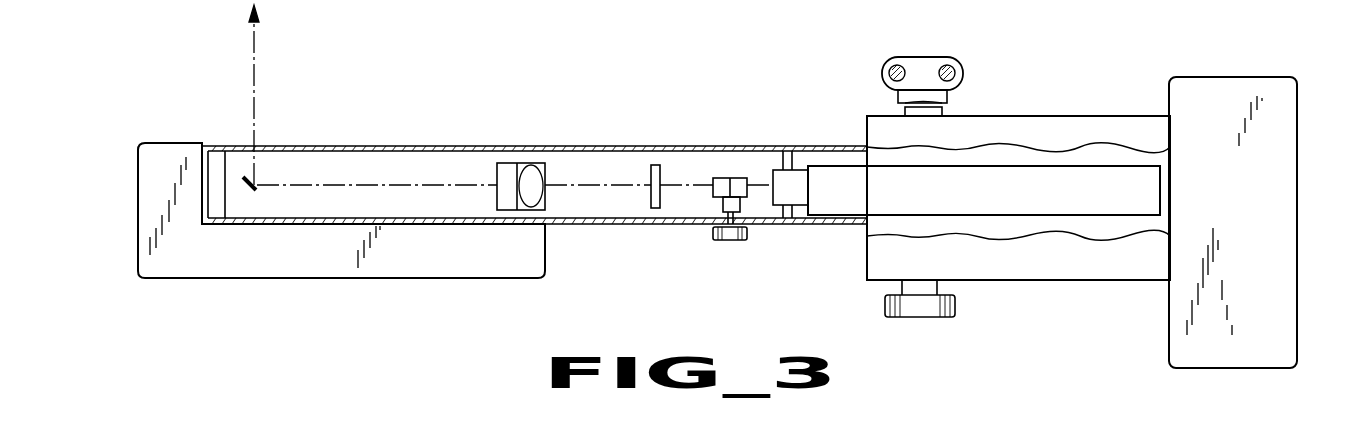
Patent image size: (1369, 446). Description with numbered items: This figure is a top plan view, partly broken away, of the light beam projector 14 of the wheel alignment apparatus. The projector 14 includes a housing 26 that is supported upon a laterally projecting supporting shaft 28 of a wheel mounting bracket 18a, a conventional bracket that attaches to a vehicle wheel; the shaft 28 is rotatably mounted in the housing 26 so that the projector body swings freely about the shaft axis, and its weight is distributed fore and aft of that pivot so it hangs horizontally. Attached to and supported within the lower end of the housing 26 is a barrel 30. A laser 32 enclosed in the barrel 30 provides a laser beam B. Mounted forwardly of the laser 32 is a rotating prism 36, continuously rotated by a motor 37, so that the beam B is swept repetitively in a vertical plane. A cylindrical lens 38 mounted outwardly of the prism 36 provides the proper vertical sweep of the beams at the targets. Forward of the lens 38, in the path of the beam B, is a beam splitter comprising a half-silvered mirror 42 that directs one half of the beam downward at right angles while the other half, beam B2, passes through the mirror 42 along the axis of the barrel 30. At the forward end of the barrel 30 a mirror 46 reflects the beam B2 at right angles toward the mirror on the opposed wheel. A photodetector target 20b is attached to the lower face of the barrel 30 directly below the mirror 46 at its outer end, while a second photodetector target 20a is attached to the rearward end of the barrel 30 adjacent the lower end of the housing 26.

The light beam projector 14 is at (1018, 176).
The wheel mounting bracket 18a is at (882, 76).
The photodetector target 20a is at (1262, 191).
The photodetector target 20b is at (272, 258).
The housing 26 is at (1012, 124).
The supporting shaft 28 is at (905, 104).
The barrel 30 is at (395, 146).
The laser 32 is at (1014, 200).
The rotating prism 36 is at (739, 176).
The motor 37 is at (719, 241).
The cylindrical lens 38 is at (649, 174).
The half-silvered mirror 42 is at (537, 192).
The mirror 46 is at (258, 190).
The laser beam B is at (692, 187).
The laser beam B2 is at (256, 88).